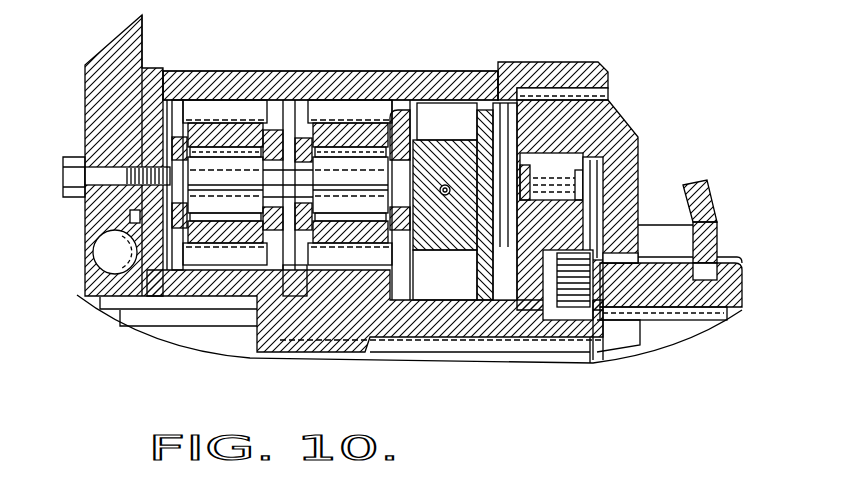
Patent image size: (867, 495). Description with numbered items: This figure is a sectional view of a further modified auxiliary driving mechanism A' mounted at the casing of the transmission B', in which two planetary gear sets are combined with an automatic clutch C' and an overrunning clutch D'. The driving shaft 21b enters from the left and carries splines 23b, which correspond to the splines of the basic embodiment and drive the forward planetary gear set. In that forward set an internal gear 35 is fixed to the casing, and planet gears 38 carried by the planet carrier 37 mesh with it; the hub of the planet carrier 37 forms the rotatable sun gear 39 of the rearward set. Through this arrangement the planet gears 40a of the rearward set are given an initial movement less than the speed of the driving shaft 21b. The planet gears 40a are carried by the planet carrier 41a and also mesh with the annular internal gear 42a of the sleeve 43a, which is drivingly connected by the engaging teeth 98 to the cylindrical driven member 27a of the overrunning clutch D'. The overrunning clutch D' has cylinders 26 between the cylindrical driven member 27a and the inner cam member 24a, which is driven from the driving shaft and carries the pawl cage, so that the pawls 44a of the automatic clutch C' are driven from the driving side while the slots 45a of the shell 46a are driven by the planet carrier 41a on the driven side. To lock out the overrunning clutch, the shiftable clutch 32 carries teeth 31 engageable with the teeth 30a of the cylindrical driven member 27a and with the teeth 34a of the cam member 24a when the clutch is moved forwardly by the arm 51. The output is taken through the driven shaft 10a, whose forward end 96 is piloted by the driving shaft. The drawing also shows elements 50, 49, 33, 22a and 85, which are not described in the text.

The transmission B' is at (100, 155).
The internal gear 35 is at (183, 107).
The planet gears 38 is at (212, 123).
The planet carrier 37 is at (275, 135).
The planet gears 40a is at (323, 127).
The annular internal gear 42a is at (334, 75).
The driving mechanism A' is at (330, 62).
The planet carrier 41a is at (405, 110).
The sleeve 43a is at (413, 80).
The slots 45a is at (432, 118).
The pawls 44a is at (445, 153).
The shell 46a is at (488, 118).
The automatic clutch C' is at (550, 168).
The engaging teeth 98 is at (608, 95).
The cylindrical driven member 27a is at (612, 122).
The overrunning clutch D' is at (641, 180).
The teeth 30a is at (641, 213).
The arm 51 is at (710, 197).
The spacer 50 is at (718, 252).
The shiftable clutch 32 is at (740, 265).
The flange 49 is at (712, 279).
The driven shaft 10a is at (695, 345).
The lower support 33 is at (620, 353).
The teeth 34a is at (575, 305).
The inner cam member 24a is at (500, 287).
The forward end 96 is at (447, 350).
The sun gear 39 is at (303, 280).
The driving shaft 21b is at (150, 335).
The splines 23b is at (103, 308).
The bore 22a is at (103, 250).
The pin 85 is at (443, 196).
The cylinders 26 is at (538, 203).
The teeth 31 is at (665, 258).